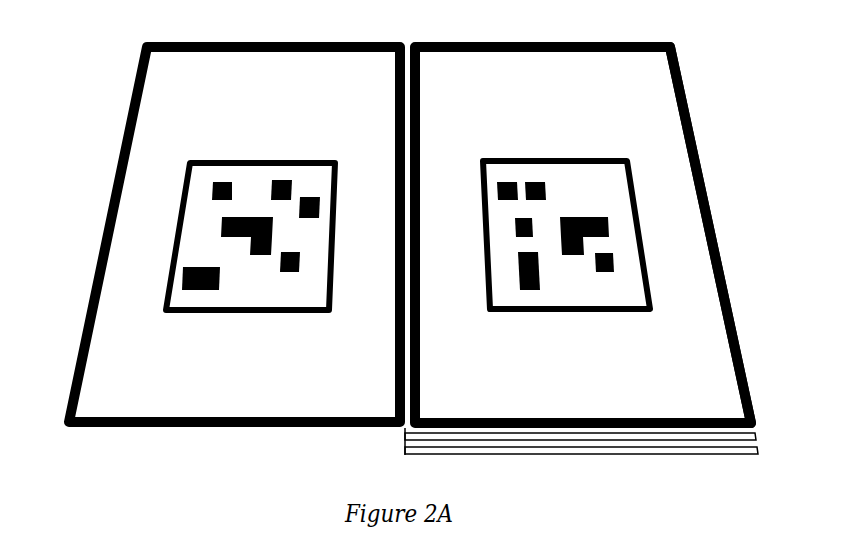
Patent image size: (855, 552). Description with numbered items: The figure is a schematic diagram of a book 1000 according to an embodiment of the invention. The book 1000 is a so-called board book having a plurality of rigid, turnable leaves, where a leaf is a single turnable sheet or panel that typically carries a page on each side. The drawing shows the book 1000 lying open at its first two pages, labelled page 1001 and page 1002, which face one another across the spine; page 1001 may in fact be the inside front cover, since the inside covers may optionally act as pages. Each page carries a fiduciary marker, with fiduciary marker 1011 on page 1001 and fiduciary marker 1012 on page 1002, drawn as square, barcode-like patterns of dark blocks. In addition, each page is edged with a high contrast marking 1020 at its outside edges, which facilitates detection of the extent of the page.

The book 1000 is at (428, 257).
The page 1001 is at (234, 234).
The page 1002 is at (583, 235).
The fiduciary marker 1011 is at (172, 199).
The fiduciary marker 1012 is at (643, 200).
The high contrast marking 1020 is at (688, 82).